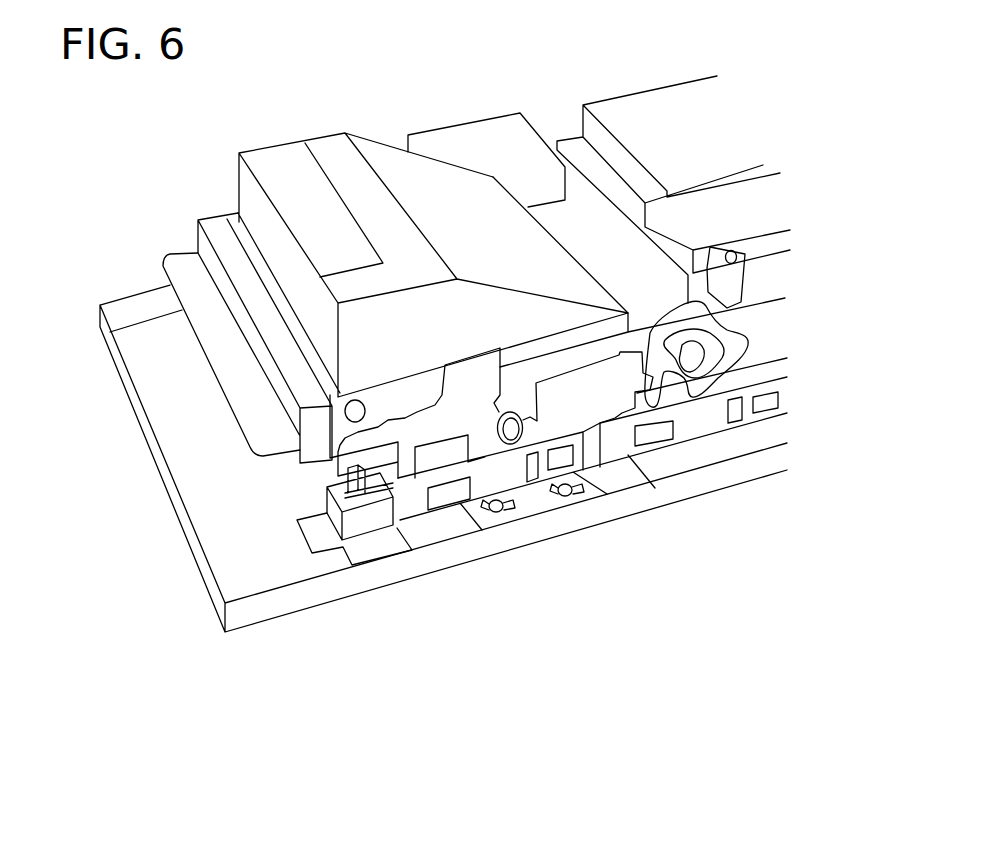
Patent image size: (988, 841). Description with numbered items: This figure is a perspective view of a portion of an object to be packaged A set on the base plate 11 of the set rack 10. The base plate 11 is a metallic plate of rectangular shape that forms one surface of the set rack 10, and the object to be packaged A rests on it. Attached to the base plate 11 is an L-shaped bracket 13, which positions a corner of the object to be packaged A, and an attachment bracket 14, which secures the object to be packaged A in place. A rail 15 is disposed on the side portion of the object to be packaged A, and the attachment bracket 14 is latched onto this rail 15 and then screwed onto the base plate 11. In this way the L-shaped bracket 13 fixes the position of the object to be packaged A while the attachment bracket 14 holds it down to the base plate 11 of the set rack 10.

The set rack 10 is at (737, 514).
The base plate 11 is at (198, 473).
The L-shaped bracket 13 is at (323, 528).
The attachment bracket 14 is at (542, 495).
The rail 15 is at (618, 445).
The object to be packaged A is at (227, 290).